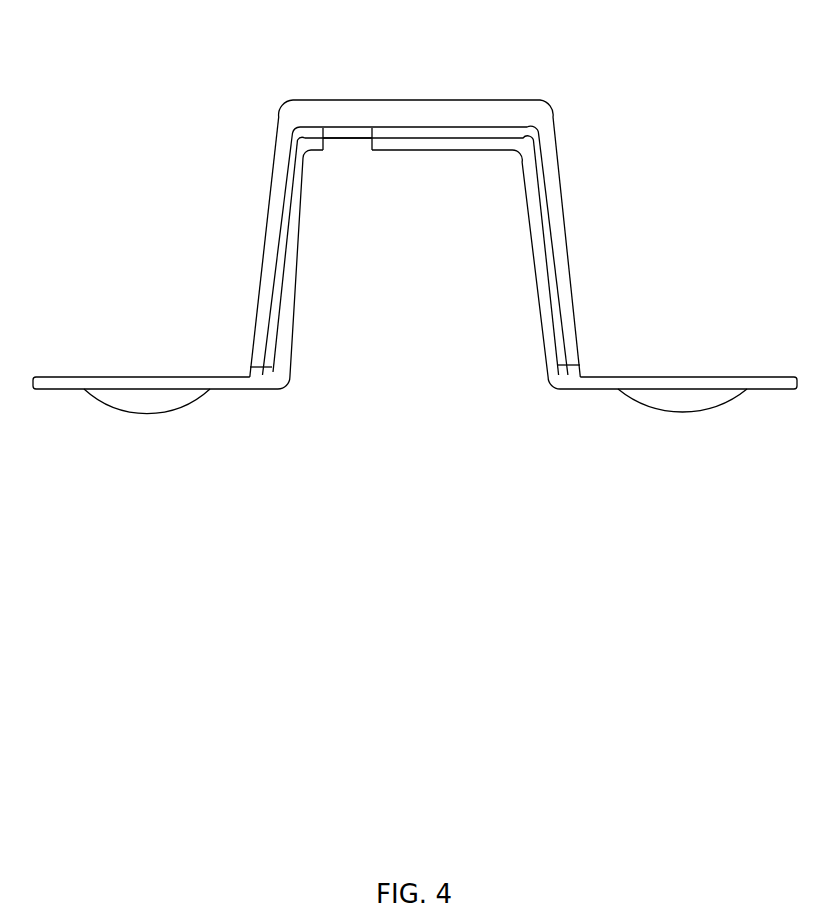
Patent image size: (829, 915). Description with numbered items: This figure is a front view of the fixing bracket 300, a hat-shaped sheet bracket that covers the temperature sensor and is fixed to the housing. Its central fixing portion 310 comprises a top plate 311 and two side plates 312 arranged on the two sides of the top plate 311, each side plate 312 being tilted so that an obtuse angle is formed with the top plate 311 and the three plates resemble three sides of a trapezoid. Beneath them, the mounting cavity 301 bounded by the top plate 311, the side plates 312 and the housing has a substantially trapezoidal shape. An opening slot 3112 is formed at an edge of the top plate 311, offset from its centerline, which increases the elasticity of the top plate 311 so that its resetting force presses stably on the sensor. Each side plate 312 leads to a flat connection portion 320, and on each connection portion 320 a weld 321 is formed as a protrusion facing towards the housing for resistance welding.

The fixing bracket 300 is at (87, 228).
The fixing portion 310 is at (283, 255).
The top plate 311 is at (498, 113).
The opening slot 3112 is at (347, 145).
The side plate 312 is at (548, 180).
The mounting cavity 301 is at (505, 292).
The connection portion 320 is at (193, 383).
The weld 321 is at (147, 400).